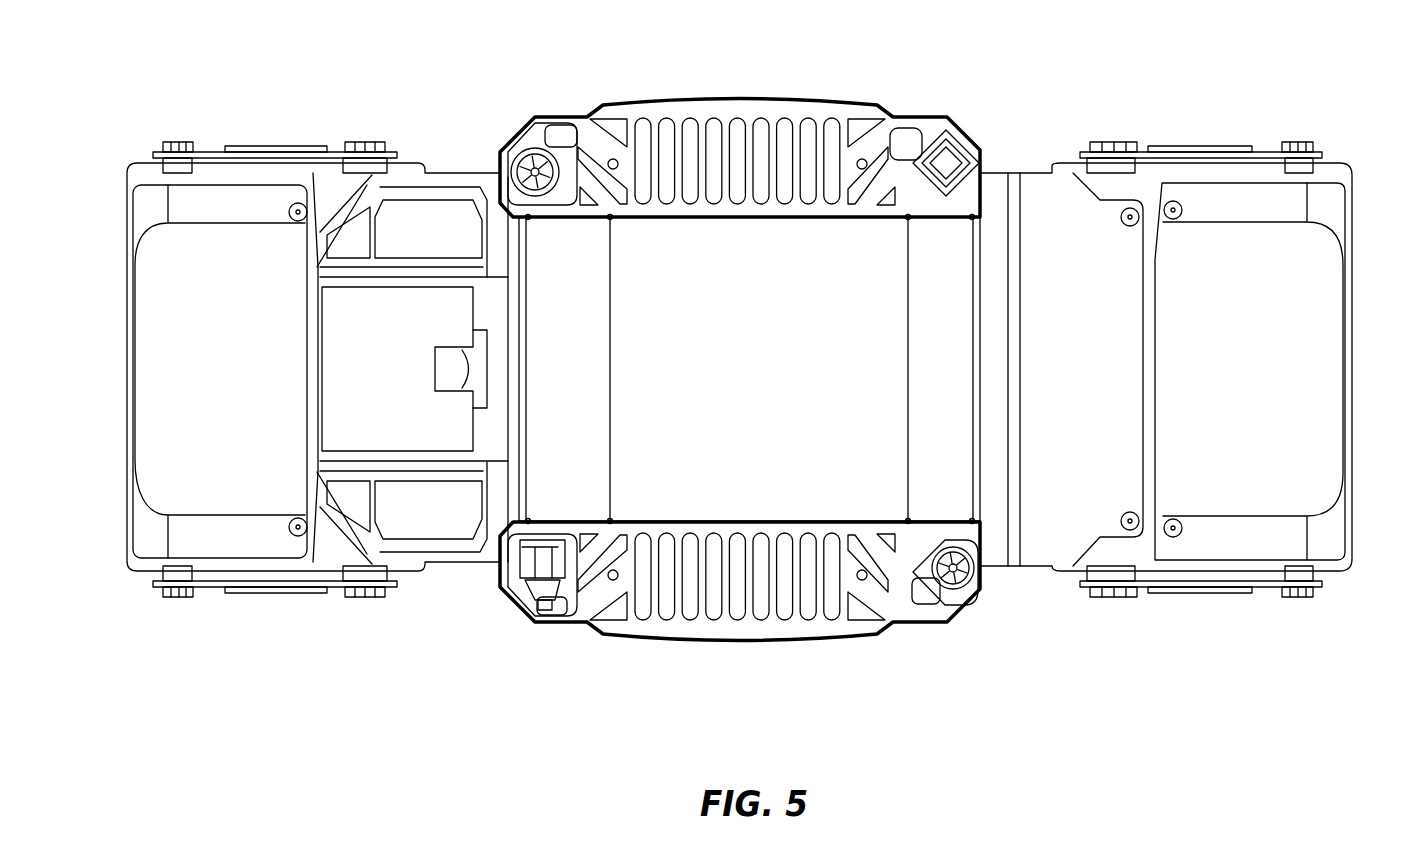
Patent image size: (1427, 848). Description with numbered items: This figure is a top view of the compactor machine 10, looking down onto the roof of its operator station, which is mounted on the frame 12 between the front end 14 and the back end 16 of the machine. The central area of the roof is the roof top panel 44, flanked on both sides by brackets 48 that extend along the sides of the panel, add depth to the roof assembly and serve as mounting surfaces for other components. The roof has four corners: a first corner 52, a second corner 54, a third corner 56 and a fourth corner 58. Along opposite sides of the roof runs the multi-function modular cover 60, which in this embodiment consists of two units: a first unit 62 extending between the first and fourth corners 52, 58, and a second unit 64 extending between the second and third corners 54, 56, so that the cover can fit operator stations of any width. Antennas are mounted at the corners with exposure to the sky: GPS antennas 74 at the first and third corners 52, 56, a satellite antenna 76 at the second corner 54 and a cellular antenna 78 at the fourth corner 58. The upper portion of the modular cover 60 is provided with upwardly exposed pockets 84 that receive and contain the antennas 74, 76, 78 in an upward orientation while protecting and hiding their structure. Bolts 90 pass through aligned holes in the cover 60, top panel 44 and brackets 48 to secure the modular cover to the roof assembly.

The compactor machine 10 is at (245, 63).
The frame 12 is at (487, 177).
The front end 14 is at (105, 357).
The back end 16 is at (1360, 357).
The roof top panel 44 is at (778, 381).
The brackets 48 is at (578, 381).
The first corner 52 is at (505, 118).
The second corner 54 is at (505, 624).
The third corner 56 is at (982, 624).
The fourth corner 58 is at (975, 108).
The modular cover 60 is at (607, 116).
The first unit 62 is at (734, 103).
The second unit 64 is at (738, 633).
The GPS antennas 74 is at (531, 140).
The satellite antenna 76 is at (521, 563).
The cellular antenna 78 is at (933, 145).
The pockets 84 is at (556, 126).
The bolts 90 is at (529, 219).